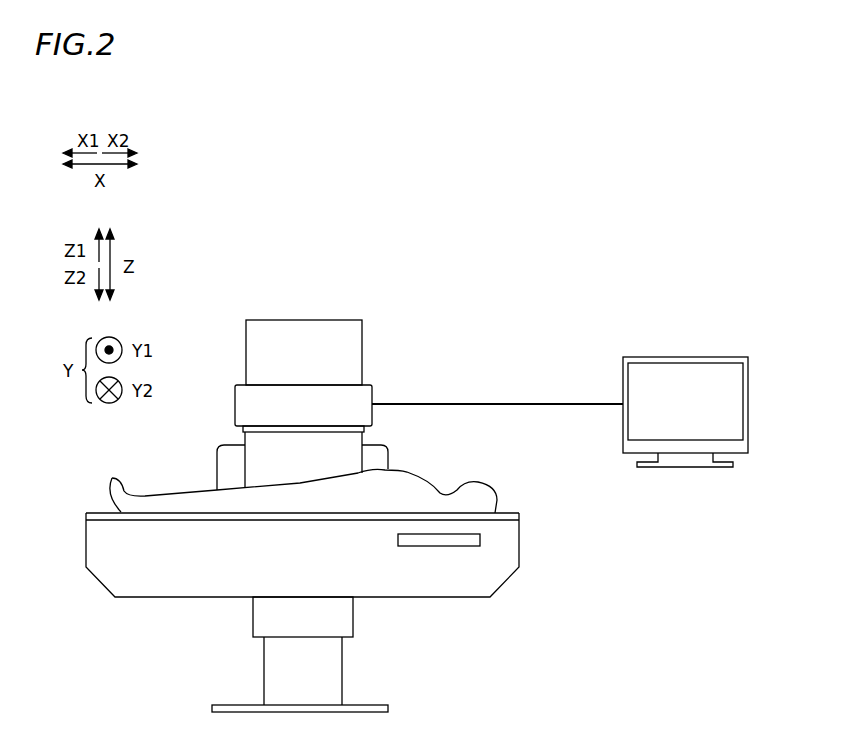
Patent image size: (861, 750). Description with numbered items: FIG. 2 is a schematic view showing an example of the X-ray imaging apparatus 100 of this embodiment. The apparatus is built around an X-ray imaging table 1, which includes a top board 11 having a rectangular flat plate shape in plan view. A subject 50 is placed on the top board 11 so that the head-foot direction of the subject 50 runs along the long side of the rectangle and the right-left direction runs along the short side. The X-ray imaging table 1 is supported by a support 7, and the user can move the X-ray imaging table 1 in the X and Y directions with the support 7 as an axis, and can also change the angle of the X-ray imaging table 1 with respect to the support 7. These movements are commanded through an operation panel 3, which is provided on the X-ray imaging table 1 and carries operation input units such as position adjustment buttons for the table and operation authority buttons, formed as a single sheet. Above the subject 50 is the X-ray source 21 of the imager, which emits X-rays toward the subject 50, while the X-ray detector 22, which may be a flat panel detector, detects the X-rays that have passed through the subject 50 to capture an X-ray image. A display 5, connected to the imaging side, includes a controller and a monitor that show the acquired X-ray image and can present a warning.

The X-ray imaging apparatus 100 is at (304, 270).
The support 7 is at (362, 333).
The X-ray source 21 is at (372, 416).
The subject 50 is at (498, 498).
The top board 11 is at (100, 512).
The X-ray imaging table 1 is at (519, 537).
The operation panel 3 is at (480, 545).
The X-ray detector 22 is at (353, 623).
The display 5 is at (710, 468).